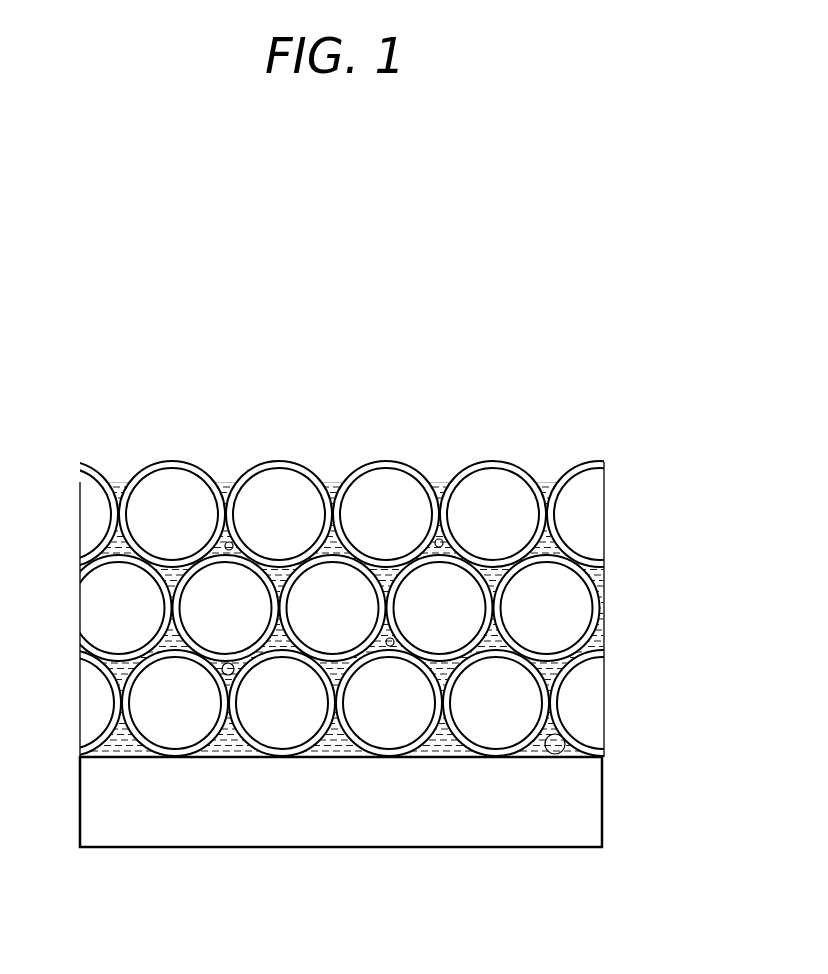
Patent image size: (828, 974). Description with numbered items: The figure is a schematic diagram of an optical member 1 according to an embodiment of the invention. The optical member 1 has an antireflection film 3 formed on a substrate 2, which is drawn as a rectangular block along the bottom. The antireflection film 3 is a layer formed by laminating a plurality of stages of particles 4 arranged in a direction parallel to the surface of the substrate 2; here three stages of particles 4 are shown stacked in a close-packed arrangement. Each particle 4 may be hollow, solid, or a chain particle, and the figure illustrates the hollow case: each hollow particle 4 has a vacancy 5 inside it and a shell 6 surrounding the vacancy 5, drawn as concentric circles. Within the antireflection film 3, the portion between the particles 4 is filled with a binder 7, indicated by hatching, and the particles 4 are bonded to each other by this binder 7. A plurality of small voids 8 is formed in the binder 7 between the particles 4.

The optical member 1 is at (323, 247).
The substrate 2 is at (567, 802).
The antireflection film 3 is at (615, 460).
The particles 4 is at (512, 332).
The vacancy 5 is at (393, 498).
The shell 6 is at (378, 463).
The binder 7 is at (120, 512).
The voids 8 is at (237, 512).